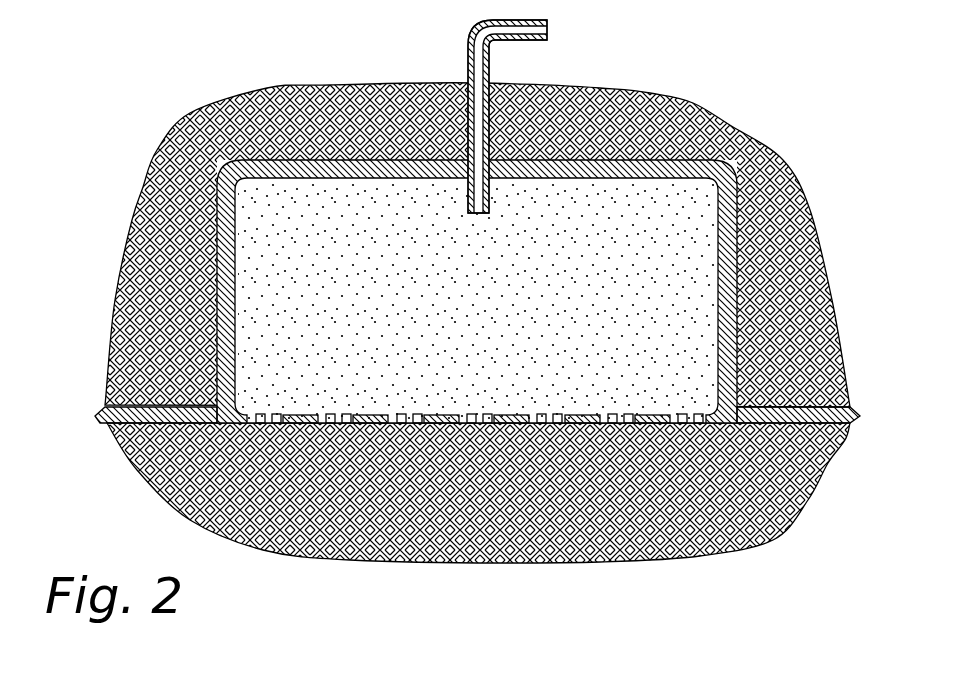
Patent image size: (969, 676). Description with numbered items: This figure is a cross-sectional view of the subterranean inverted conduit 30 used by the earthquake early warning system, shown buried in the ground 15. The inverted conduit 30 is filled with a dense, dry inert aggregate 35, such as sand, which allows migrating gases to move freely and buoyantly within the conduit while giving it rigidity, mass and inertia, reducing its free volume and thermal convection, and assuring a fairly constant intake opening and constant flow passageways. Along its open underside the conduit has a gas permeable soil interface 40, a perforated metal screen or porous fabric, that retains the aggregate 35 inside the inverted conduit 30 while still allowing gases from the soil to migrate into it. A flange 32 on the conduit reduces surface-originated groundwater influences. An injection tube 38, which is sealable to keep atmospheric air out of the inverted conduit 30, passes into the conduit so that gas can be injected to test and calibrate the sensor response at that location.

The ground 15 is at (607, 117).
The inverted conduit 30 is at (737, 193).
The flange 32 is at (813, 418).
The aggregate 35 is at (310, 328).
The injection tube 38 is at (468, 52).
The gas permeable soil interface 40 is at (655, 427).